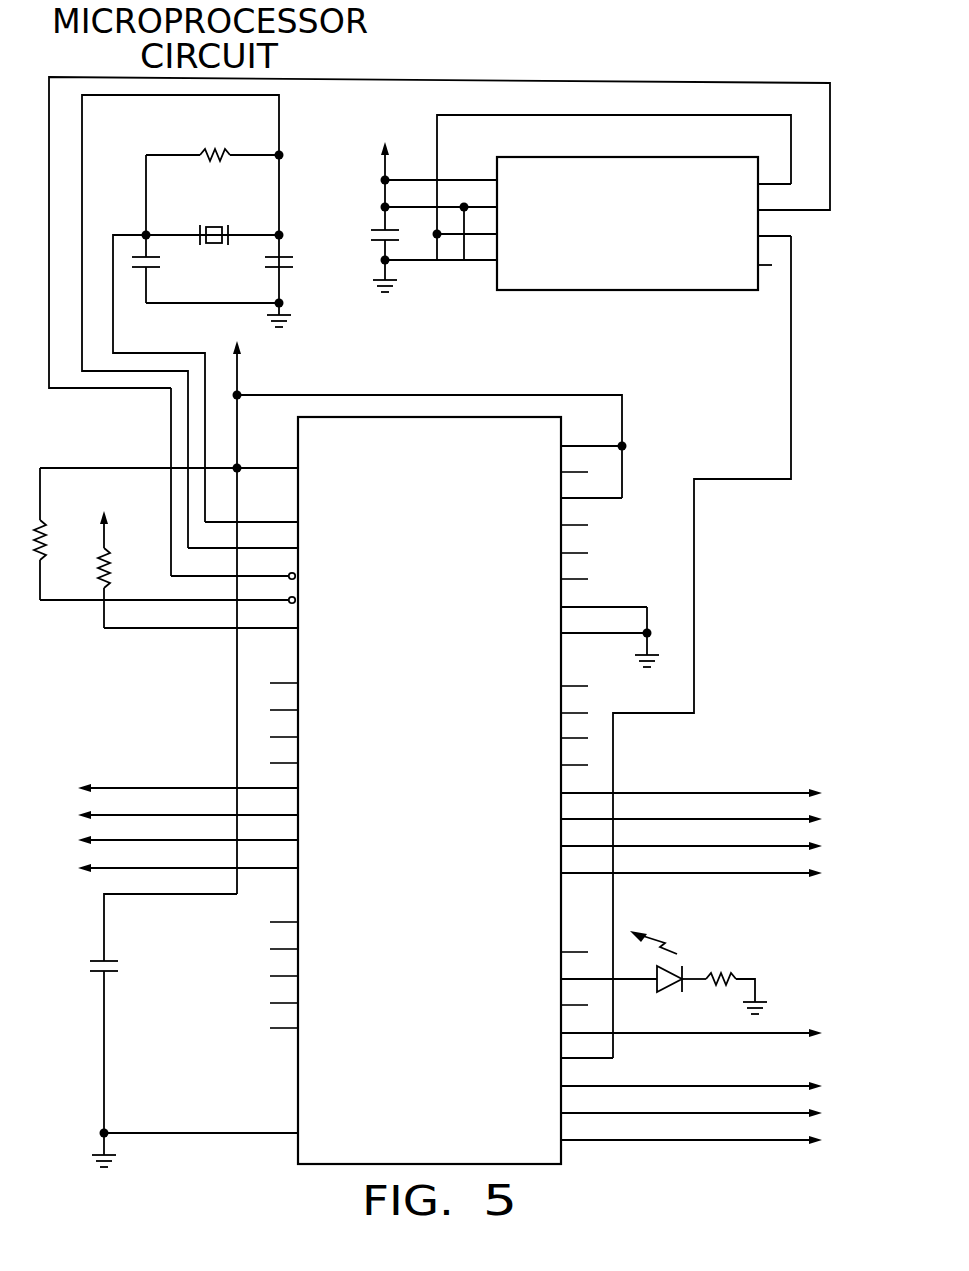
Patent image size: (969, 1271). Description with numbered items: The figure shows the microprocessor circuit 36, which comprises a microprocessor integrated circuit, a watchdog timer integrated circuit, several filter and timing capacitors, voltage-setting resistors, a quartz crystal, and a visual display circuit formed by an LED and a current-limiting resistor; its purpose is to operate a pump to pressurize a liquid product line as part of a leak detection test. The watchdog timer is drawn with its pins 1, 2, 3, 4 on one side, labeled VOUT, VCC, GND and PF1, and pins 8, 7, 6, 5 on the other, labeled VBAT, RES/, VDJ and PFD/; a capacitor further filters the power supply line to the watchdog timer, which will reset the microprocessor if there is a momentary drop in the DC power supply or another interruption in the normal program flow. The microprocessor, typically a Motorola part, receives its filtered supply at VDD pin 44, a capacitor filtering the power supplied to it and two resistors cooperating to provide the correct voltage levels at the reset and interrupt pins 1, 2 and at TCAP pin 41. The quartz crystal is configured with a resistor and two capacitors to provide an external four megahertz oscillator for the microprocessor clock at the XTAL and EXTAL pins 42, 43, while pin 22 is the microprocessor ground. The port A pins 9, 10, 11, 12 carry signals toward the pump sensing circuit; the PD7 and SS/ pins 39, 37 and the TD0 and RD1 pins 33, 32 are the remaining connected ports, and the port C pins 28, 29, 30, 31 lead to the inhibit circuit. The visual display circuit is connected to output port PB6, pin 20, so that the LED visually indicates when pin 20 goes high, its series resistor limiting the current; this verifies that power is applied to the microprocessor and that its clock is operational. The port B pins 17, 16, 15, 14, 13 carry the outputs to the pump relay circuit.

The microprocessor circuit 36 is at (442, 78).
The pin 1 (VOUT of IC2 / RES/ of IC1) 1 is at (334, 368).
The pin 2 (VCC of IC2 / IRQ/ of IC1) 2 is at (268, 393).
The pin 3 GND of watch dog timer IC2 3 is at (467, 222).
The pin 4 PF1 of watch dog timer IC2 4 is at (441, 249).
The pin 5 PFD/ of watch dog timer IC2 5 is at (767, 253).
The pin 6 VDJ of watch dog timer IC2 6 is at (774, 225).
The pin 7 RES/ of watch dog timer IC2 7 is at (794, 199).
The pin 8 VBAT of watch dog timer IC2 8 is at (774, 173).
The pin 44 VDD of microprocessor IC1 44 is at (169, 457).
The pin 42 XTAL of microprocessor IC1 42 is at (251, 511).
The pin 43 EXTAL of microprocessor IC1 43 is at (243, 537).
The pin 41 TCAP of microprocessor IC1 41 is at (201, 617).
The pin 9 PA3 of microprocessor IC1 9 is at (188, 779).
The pin 10 PA2 of microprocessor IC1 10 is at (188, 806).
The pin 11 PA1 of microprocessor IC1 11 is at (188, 831).
The pin 12 PA0 of microprocessor IC1 12 is at (188, 859).
The pin 22 GND of microprocessor IC1 22 is at (201, 1122).
The pin 39 PD7 of microprocessor IC1 39 is at (591, 435).
The pin 37 SS/ of microprocessor IC1 37 is at (591, 487).
The pin 33 TD0 of microprocessor IC1 33 is at (604, 596).
The pin 32 RD1 of microprocessor IC1 32 is at (604, 622).
The pin 28 PC3 of microprocessor IC1 28 is at (691, 784).
The pin 29 PC2 of microprocessor IC1 29 is at (691, 810).
The pin 30 PC1 of microprocessor IC1 30 is at (691, 837).
The pin 31 PC0 of microprocessor IC1 31 is at (691, 864).
The IC1 pin 20 is at (609, 968).
The pin 17 PB4 of microprocessor IC1 17 is at (691, 1024).
The pin 16 PB3 of microprocessor IC1 16 is at (587, 1047).
The pin 15 PB2 of microprocessor IC1 15 is at (691, 1077).
The pin 14 PB1 of microprocessor IC1 14 is at (691, 1104).
The pin 13 PB0 of microprocessor IC1 13 is at (691, 1131).